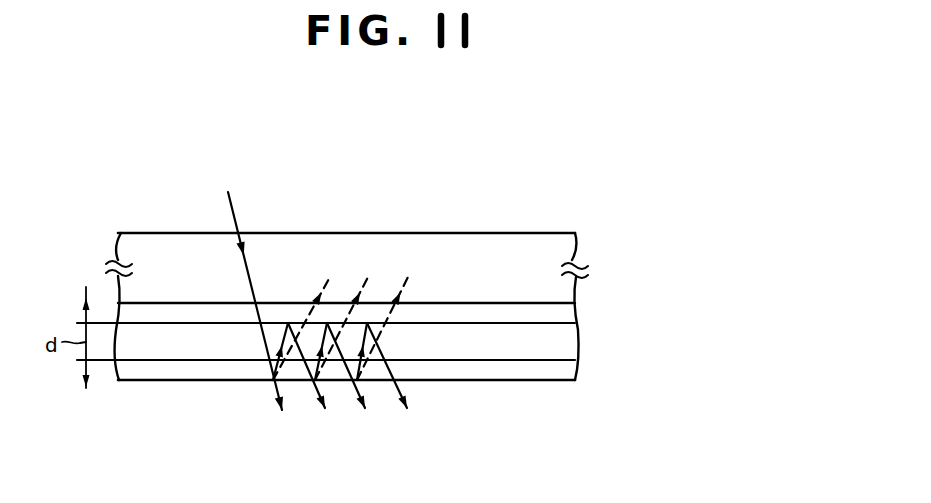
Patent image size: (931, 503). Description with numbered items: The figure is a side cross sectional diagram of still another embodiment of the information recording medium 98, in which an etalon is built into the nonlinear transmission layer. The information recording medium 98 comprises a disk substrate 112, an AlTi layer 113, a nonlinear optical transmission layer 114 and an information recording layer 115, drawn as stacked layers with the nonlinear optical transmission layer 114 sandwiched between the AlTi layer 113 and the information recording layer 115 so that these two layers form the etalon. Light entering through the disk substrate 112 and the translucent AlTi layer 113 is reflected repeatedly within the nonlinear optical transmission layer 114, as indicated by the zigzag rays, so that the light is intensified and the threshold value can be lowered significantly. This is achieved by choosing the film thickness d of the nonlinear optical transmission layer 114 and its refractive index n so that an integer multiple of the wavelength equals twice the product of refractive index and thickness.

The information recording medium 98 is at (100, 227).
The disk substrate 112 is at (541, 248).
The AlTi layer 113 is at (562, 317).
The nonlinear optical transmission layer 114 is at (561, 337).
The information recording layer 115 is at (561, 369).